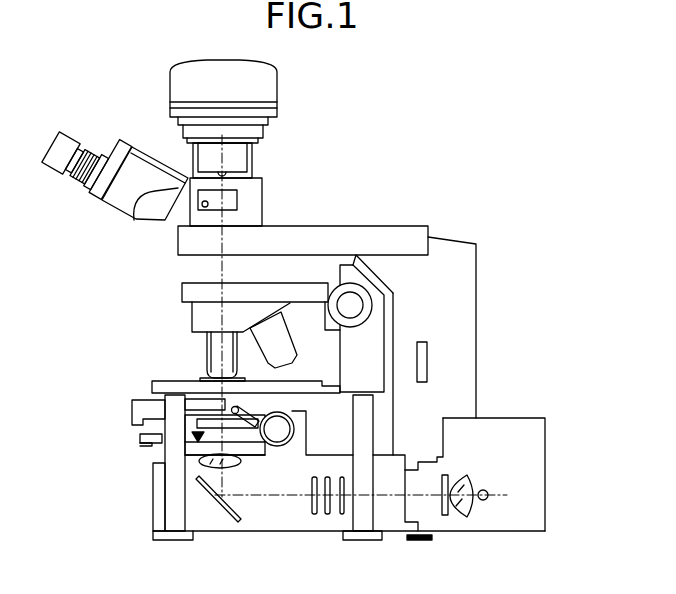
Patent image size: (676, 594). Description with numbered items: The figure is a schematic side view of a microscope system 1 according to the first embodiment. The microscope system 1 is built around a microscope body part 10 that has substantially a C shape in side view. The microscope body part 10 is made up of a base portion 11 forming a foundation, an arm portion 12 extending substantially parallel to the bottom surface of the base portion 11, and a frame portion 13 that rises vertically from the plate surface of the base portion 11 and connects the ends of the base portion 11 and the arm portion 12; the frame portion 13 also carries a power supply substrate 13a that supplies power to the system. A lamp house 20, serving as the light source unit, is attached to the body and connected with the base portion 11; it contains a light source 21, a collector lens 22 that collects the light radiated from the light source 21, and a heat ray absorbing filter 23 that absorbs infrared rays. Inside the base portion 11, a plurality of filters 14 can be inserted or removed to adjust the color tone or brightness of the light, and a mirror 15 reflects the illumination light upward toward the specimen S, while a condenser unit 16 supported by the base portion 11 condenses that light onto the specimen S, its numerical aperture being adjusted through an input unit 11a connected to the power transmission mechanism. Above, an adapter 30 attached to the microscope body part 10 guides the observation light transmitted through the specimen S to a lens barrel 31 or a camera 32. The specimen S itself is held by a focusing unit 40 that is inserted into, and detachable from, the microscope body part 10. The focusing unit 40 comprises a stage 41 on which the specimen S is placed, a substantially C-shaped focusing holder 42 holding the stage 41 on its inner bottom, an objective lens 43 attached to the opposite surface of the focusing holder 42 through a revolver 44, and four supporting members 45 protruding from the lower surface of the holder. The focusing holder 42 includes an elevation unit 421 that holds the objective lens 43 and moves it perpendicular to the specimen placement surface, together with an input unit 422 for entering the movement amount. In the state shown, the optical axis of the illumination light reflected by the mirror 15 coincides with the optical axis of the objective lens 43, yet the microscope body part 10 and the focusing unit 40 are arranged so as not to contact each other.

The microscope system 1 is at (386, 99).
The microscope body part 10 is at (456, 226).
The base portion 11 is at (270, 525).
The input unit 11a is at (297, 428).
The arm portion 12 is at (349, 233).
The frame portion 13 is at (462, 390).
The power supply substrate 13a is at (428, 358).
The filters 14 is at (342, 514).
The mirror 15 is at (218, 507).
The condenser unit 16 is at (116, 423).
The lamp house 20 is at (533, 433).
The light source 21 is at (482, 489).
The collector lens 22 is at (472, 512).
The heat ray absorbing filter 23 is at (450, 515).
The adapter 30 is at (253, 199).
The lens barrel 31 is at (126, 140).
The camera 32 is at (268, 86).
The focusing unit 40 is at (121, 330).
The stage 41 is at (152, 382).
The focusing holder 42 is at (373, 332).
The elevation unit 421 is at (182, 290).
The input unit 422 is at (373, 302).
The objective lens 43 is at (208, 345).
The revolver 44 is at (202, 313).
The supporting members 45 is at (172, 493).
The specimen S is at (202, 378).